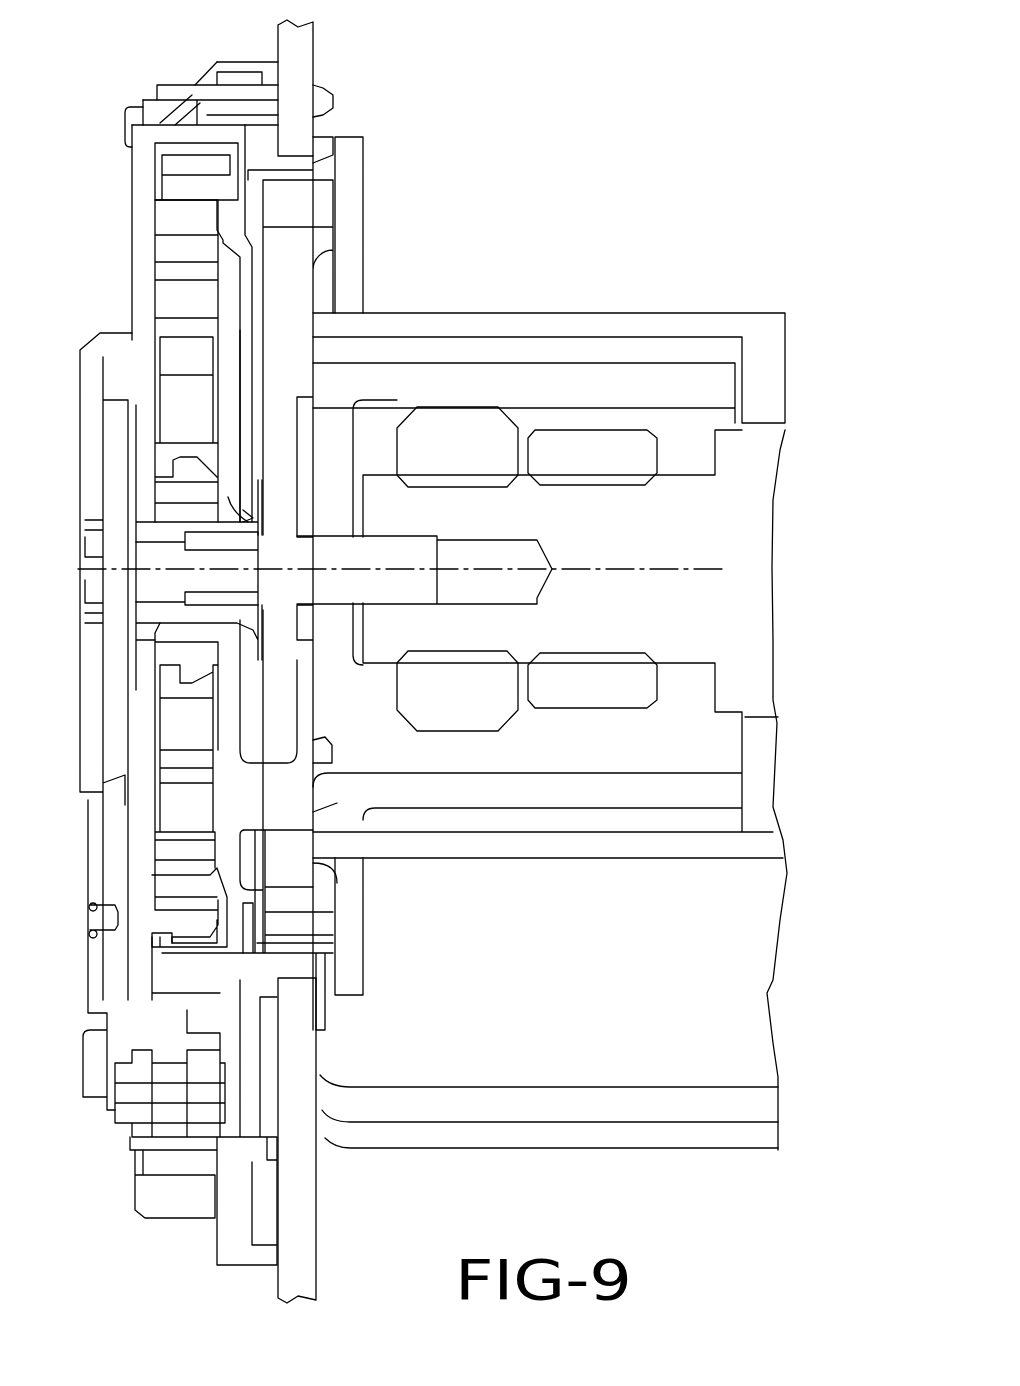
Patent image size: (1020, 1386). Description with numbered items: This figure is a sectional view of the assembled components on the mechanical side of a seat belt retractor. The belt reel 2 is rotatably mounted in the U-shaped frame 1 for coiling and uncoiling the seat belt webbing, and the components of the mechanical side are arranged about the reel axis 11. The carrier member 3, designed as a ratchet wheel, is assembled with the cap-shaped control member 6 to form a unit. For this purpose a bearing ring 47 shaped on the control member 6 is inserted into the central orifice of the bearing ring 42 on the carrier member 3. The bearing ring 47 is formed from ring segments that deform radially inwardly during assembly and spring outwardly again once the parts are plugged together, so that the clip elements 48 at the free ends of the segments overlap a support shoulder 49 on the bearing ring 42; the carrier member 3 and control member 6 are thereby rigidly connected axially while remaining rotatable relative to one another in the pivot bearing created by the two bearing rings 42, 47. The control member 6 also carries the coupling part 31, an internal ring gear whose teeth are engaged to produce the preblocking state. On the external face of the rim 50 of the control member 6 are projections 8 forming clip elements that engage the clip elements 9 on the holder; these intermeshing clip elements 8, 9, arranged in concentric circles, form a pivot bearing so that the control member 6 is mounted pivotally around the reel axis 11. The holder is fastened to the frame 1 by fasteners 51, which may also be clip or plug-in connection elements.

The frame 1 is at (298, 68).
The belt reel 2 is at (607, 318).
The carrier member 3 is at (230, 345).
The control member 6 is at (120, 760).
The projections 8 is at (205, 115).
The clip elements 9 is at (172, 100).
The reel axis 11 is at (607, 565).
The coupling part 31 is at (180, 215).
The bearing ring 42 is at (182, 523).
The bearing ring 47 is at (153, 532).
The clip elements 48 is at (247, 523).
The support shoulder 49 is at (228, 497).
The rim 50 is at (190, 135).
The fasteners 51 is at (320, 107).